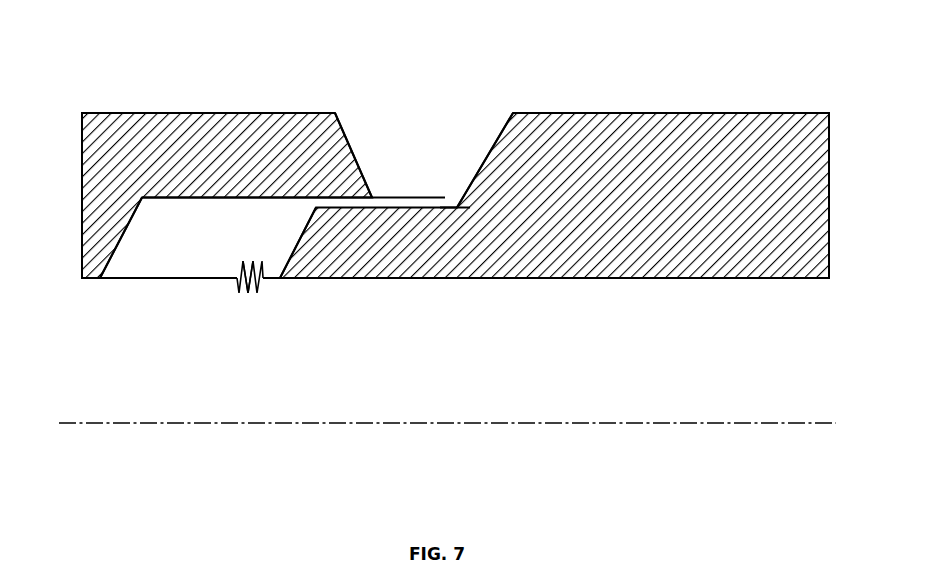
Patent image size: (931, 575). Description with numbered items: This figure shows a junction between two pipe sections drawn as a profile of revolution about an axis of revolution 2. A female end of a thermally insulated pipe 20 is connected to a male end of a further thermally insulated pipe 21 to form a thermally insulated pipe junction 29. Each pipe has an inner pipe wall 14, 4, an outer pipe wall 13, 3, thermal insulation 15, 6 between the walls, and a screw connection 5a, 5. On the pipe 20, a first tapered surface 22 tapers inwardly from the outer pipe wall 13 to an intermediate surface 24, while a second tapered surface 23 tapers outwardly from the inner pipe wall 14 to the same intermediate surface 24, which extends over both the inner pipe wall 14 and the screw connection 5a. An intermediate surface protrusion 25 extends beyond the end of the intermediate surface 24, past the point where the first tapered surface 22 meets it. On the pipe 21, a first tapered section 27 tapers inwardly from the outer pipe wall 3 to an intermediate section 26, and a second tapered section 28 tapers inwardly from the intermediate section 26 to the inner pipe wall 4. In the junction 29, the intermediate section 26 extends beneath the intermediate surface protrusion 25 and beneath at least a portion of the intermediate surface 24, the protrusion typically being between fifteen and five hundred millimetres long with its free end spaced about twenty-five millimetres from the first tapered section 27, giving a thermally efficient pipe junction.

The axis of revolution 2 is at (328, 423).
The outer pipe wall 3 is at (666, 113).
The inner pipe wall 4 is at (622, 279).
The screw connection 5 is at (261, 300).
The screw connection 5a is at (243, 300).
The thermal insulation 6 is at (803, 188).
The outer pipe wall 13 is at (107, 113).
The inner pipe wall 14 is at (193, 279).
The thermal insulation 15 is at (198, 138).
The thermally insulated pipe 20 is at (160, 93).
The further thermally insulated pipe 21 is at (764, 93).
The first tapered surface 22 is at (345, 135).
The second tapered surface 23 is at (117, 250).
The intermediate surface 24 is at (182, 200).
The intermediate surface protrusion 25 is at (404, 197).
The intermediate section 26 is at (455, 206).
The first tapered section 27 is at (502, 137).
The second tapered section 28 is at (293, 252).
The thermally insulated pipe junction 29 is at (713, 313).